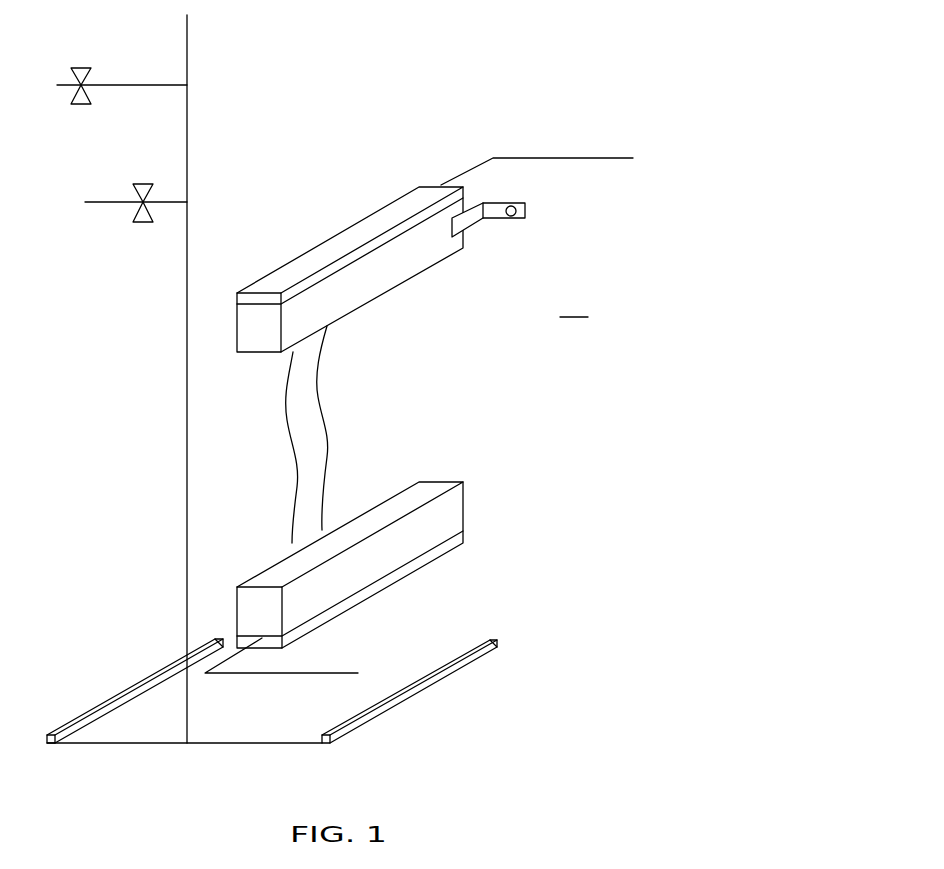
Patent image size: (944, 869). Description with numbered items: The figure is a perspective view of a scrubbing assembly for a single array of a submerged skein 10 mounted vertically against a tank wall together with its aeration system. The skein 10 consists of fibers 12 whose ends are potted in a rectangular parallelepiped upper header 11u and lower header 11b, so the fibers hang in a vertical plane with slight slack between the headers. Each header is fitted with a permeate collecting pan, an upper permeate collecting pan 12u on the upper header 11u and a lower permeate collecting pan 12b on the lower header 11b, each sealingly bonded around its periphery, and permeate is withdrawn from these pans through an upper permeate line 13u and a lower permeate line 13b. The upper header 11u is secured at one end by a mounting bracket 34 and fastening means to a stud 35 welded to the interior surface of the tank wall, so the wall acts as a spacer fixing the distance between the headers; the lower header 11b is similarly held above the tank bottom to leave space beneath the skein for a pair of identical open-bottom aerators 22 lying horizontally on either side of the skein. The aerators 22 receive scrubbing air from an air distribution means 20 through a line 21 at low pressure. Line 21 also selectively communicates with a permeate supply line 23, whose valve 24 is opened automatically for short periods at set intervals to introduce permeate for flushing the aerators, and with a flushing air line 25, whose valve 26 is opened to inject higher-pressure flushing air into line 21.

The skein 10 is at (328, 212).
The upper header 11u is at (438, 257).
The lower header 11b is at (457, 527).
The fibers 12 is at (325, 428).
The upper permeate collecting pan 12u is at (348, 260).
The lower permeate collecting pan 12b is at (462, 567).
The upper permeate line 13u is at (563, 158).
The lower permeate line 13b is at (342, 673).
The air distribution means 20 is at (140, 502).
The line 21 is at (187, 387).
The open-bottom aerators 22 is at (72, 720).
The permeate supply line 23 is at (97, 203).
The valve 24 is at (144, 223).
The flushing air line 25 is at (132, 85).
The valve 26 is at (79, 67).
The mounting bracket 34 is at (472, 204).
The stud 35 is at (511, 216).